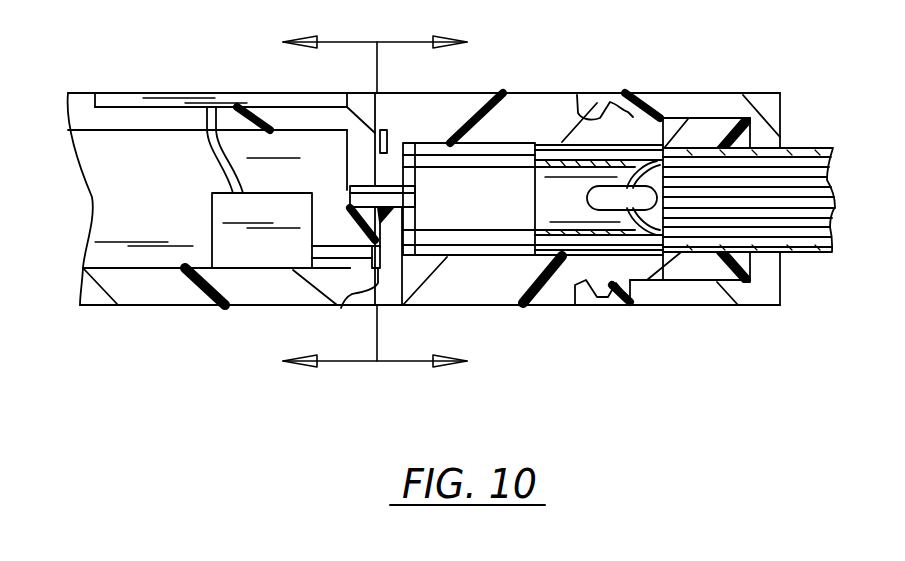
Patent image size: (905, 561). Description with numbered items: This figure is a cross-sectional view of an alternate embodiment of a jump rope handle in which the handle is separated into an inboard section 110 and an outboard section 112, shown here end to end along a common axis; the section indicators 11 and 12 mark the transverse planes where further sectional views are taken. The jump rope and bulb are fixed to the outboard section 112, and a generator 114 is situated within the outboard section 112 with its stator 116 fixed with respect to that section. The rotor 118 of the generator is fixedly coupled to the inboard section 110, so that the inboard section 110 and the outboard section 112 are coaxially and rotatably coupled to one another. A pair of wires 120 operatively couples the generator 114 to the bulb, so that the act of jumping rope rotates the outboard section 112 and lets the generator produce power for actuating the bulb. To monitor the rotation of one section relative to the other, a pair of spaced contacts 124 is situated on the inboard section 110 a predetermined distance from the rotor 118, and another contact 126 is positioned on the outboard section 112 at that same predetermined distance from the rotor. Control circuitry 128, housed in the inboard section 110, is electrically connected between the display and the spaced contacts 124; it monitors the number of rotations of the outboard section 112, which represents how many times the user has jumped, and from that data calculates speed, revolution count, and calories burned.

The section line 11- 11 is at (461, 201).
The section line 12- 12 is at (360, 201).
The inboard section 110 is at (190, 305).
The outboard section 112 is at (645, 306).
The generator 114 is at (523, 145).
The stator 116 is at (510, 192).
The rotor 118 is at (348, 195).
The wires 120 is at (582, 197).
The spaced contacts 124 is at (352, 294).
The contact 126 is at (380, 132).
The control circuitry 128 is at (226, 205).